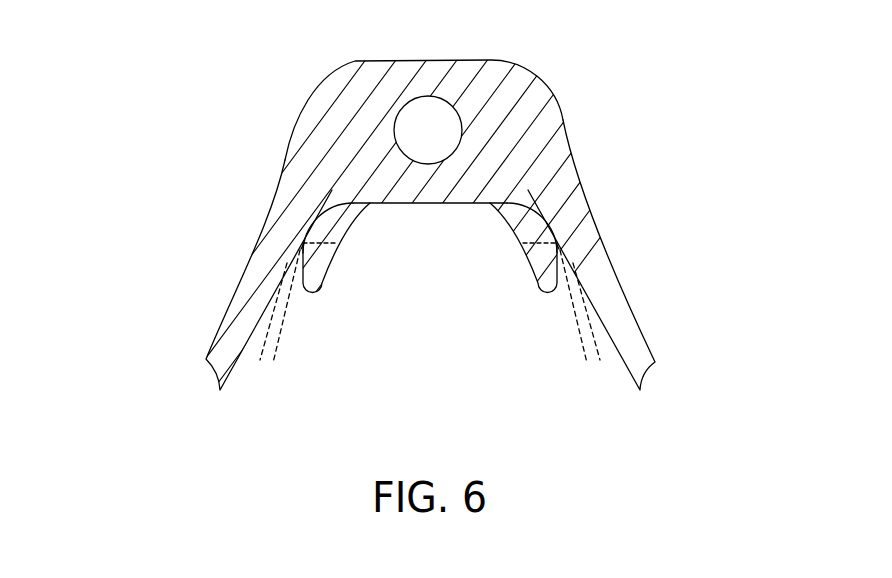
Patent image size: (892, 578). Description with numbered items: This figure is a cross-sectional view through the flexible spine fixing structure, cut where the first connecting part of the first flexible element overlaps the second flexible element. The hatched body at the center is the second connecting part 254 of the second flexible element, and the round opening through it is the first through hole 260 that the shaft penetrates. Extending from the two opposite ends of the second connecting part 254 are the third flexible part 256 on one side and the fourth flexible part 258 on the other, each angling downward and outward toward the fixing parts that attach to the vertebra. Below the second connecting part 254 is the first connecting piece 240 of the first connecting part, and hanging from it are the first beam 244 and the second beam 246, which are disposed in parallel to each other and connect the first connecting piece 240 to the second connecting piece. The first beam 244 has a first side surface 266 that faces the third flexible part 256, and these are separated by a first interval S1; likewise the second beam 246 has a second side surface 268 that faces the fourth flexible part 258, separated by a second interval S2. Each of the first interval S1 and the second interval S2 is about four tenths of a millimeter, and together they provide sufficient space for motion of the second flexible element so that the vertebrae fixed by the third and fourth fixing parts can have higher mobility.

The first connecting piece 240 is at (555, 207).
The first beam 244 is at (327, 265).
The second beam 246 is at (537, 262).
The second connecting part 254 is at (515, 84).
The third flexible part 256 is at (237, 327).
The fourth flexible part 258 is at (623, 327).
The first through hole 260 is at (437, 122).
The first side surface 266 is at (303, 246).
The second side surface 268 is at (558, 245).
The first interval S1 is at (282, 366).
The second interval S2 is at (606, 357).